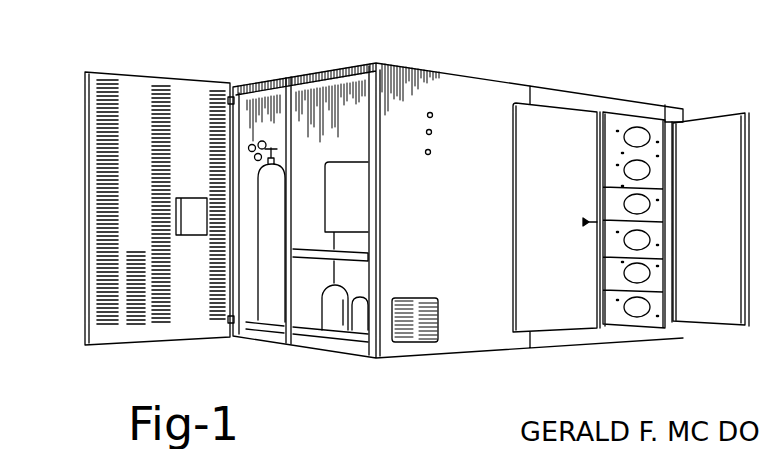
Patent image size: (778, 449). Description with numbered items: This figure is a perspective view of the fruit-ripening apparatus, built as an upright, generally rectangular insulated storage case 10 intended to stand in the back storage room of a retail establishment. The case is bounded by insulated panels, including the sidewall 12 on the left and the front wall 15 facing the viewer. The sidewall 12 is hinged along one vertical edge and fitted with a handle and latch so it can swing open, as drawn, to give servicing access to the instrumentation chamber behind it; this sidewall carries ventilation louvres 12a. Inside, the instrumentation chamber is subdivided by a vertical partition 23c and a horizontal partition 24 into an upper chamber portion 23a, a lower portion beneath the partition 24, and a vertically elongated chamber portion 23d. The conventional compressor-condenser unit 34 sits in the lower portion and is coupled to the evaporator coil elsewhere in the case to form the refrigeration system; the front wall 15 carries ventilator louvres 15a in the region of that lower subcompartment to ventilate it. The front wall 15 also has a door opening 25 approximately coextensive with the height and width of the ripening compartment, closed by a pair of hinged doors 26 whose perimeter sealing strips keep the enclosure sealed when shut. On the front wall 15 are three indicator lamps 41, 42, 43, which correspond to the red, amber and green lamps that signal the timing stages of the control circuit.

The storage case 10 is at (558, 73).
The sidewall 12 is at (136, 77).
The ventilation louvres 12a is at (155, 140).
The front wall 15 is at (488, 86).
The ventilator louvres 15a is at (407, 343).
The upper chamber portion 23a is at (358, 112).
The vertical partition 23c is at (303, 95).
The vertically elongated chamber portion 23d is at (262, 94).
The horizontal partition 24 is at (352, 252).
The door opening 25 is at (640, 118).
The hinged doors 26 is at (697, 320).
The compressor-condenser unit 34 is at (334, 323).
The indicator light 41 is at (433, 112).
The indicator light 42 is at (432, 130).
The indicator light 43 is at (431, 152).